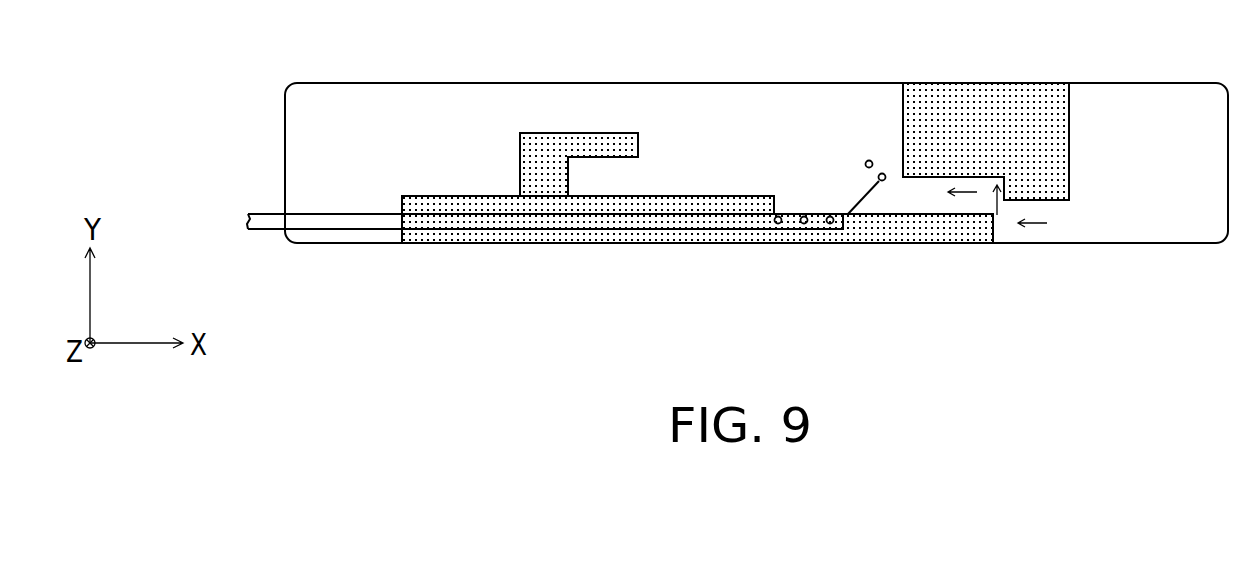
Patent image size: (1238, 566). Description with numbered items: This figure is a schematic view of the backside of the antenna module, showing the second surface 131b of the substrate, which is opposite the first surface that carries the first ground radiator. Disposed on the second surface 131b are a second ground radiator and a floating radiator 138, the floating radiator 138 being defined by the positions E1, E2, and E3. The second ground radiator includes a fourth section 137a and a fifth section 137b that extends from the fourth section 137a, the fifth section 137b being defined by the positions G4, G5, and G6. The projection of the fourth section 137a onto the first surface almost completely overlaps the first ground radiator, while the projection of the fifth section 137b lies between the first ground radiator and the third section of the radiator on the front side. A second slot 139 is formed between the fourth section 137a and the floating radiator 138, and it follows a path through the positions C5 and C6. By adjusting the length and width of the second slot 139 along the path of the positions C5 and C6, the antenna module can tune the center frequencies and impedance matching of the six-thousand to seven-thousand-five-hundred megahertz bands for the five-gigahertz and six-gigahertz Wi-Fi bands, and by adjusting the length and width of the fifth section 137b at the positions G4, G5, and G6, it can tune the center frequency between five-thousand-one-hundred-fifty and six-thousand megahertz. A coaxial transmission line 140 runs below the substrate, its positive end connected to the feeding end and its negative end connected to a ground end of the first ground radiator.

The second surface 131b is at (323, 130).
The fourth section 137a is at (873, 243).
The fifth section 137b is at (574, 142).
The floating radiator 138 is at (1048, 137).
The second slot 139 is at (933, 205).
The coaxial transmission line 140 is at (343, 229).
The position G4 is at (544, 182).
The position G5 is at (544, 145).
The position G6 is at (614, 145).
The position E1 is at (928, 160).
The position E2 is at (1020, 160).
The position E3 is at (1036, 190).
The position C5 is at (1042, 220).
The position C6 is at (875, 196).